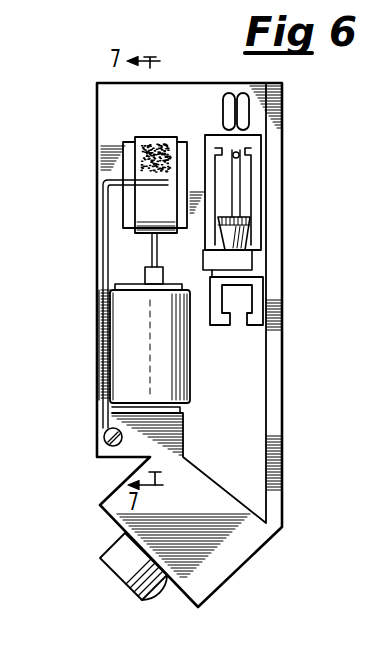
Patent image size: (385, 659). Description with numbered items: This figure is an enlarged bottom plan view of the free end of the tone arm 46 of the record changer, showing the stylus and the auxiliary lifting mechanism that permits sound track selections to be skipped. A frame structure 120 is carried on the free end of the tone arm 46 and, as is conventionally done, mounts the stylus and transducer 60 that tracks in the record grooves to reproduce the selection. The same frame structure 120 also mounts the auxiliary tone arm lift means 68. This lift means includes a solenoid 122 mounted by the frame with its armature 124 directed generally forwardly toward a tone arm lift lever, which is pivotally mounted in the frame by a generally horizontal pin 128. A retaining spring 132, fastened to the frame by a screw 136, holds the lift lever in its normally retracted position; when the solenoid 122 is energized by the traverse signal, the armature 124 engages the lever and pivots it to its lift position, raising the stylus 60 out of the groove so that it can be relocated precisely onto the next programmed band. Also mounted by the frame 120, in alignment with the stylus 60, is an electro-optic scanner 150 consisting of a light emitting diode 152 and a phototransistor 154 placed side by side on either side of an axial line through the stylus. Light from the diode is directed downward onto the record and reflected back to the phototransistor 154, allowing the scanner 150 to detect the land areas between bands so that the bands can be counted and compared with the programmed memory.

The frame structure 120 is at (281, 356).
The auxiliary tone arm lift means 68 is at (93, 319).
The retaining spring 132 is at (104, 210).
The pin 128 is at (123, 238).
The armature 124 is at (146, 272).
The solenoid 122 is at (130, 372).
The screw 136 is at (103, 437).
The stylus and transducer 60 is at (246, 181).
The electro-optic scanner 150 is at (224, 82).
The phototransistor 154 is at (223, 108).
The light emitting diode 152 is at (250, 108).
The tone arm 46 is at (120, 556).